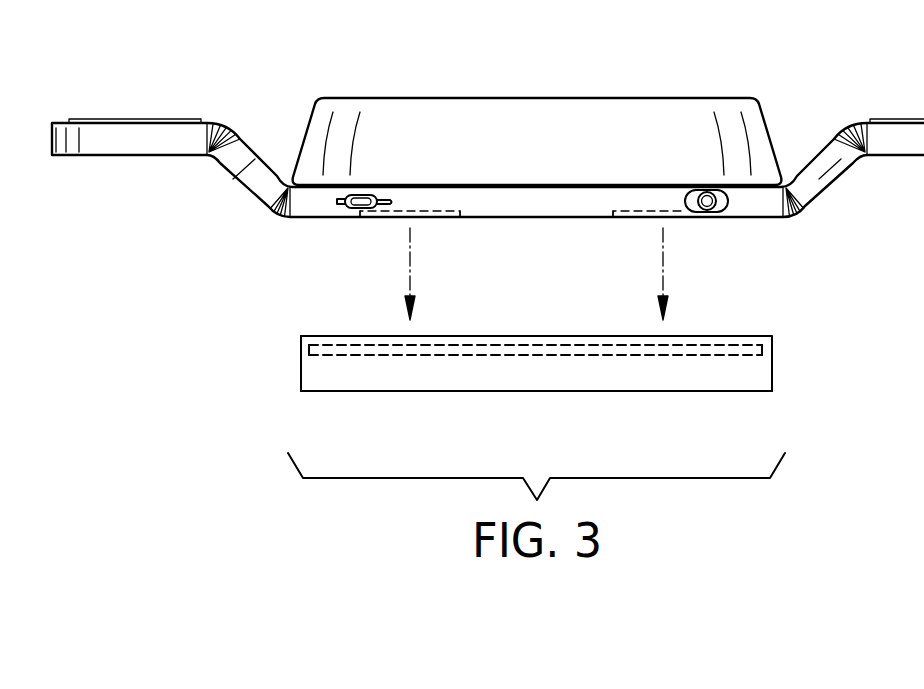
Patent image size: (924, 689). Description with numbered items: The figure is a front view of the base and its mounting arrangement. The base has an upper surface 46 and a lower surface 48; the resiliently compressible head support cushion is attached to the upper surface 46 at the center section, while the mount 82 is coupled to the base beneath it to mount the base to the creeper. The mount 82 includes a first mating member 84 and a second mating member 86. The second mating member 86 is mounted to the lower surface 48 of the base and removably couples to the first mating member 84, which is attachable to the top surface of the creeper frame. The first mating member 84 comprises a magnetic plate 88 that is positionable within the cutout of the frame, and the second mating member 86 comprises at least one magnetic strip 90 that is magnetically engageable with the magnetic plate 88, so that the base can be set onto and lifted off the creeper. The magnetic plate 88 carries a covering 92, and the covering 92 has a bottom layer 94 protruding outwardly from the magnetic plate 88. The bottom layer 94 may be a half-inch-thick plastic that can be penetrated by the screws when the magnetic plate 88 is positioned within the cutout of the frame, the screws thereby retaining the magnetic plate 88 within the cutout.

The upper surface 46 is at (537, 185).
The lower surface 48 is at (535, 217).
The mount 82 is at (299, 259).
The first mating member 84 is at (558, 357).
The second mating member 86 is at (736, 247).
The magnetic plate 88 is at (762, 348).
The magnetic strip 90 is at (443, 216).
The covering 92 is at (301, 360).
The bottom layer 94 is at (735, 382).